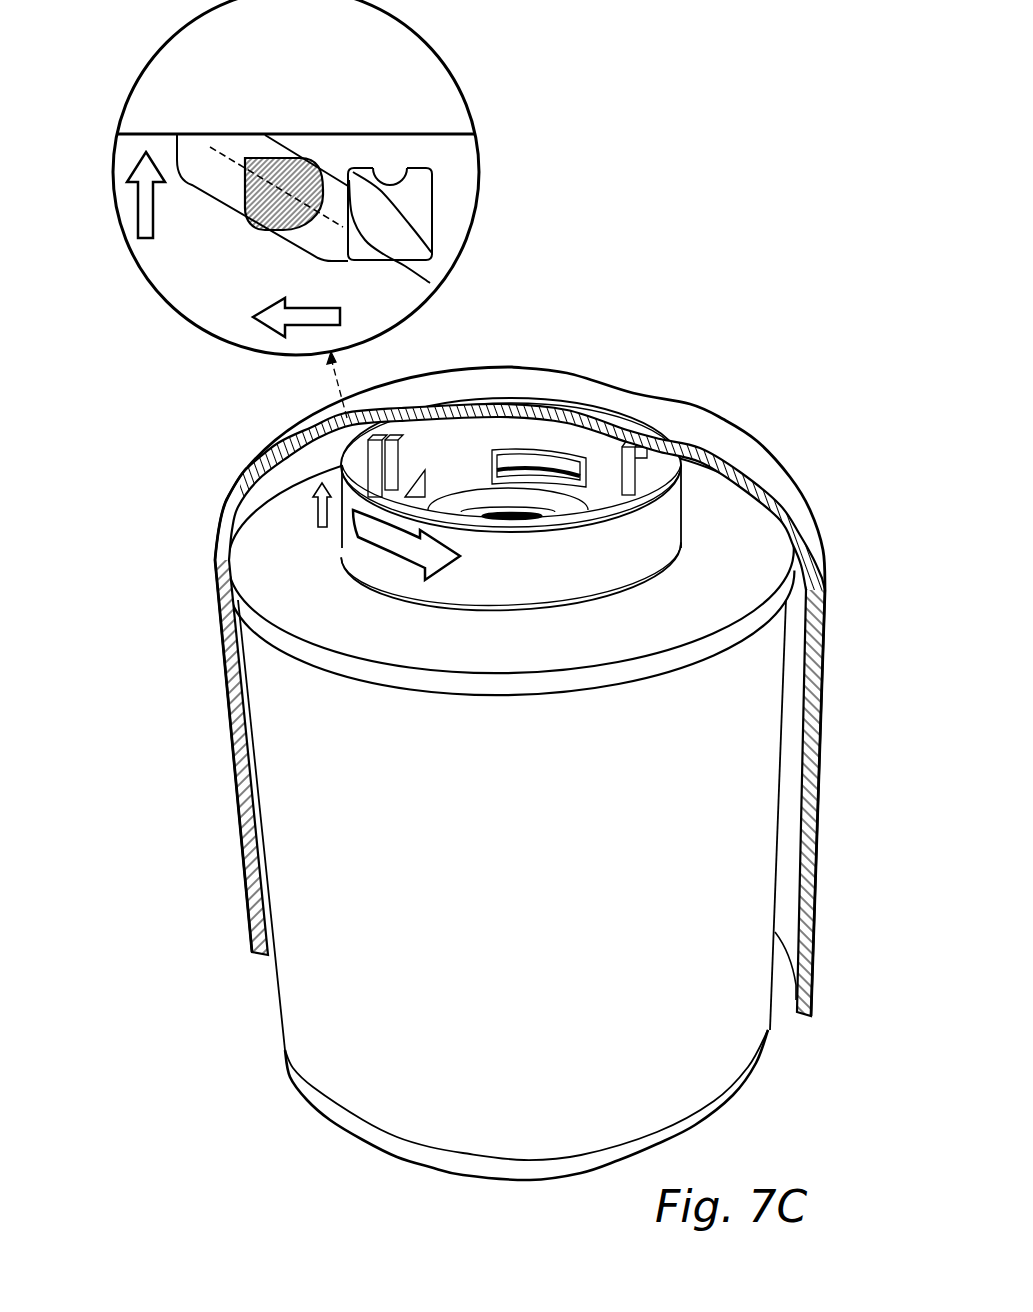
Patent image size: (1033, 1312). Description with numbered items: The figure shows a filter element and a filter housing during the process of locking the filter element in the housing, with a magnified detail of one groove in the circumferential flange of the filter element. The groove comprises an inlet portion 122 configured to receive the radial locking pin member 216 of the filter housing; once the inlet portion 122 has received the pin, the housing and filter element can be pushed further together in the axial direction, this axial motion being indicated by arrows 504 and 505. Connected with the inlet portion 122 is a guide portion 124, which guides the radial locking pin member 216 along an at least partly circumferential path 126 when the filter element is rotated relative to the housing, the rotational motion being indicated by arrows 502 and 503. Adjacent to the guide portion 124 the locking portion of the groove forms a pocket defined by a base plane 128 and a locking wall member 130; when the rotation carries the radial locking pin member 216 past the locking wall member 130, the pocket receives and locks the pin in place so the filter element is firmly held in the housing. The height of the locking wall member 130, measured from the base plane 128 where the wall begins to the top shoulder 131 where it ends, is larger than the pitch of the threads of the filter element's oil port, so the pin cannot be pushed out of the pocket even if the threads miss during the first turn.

The inlet portion 122 is at (217, 134).
The radial locking pin member 216 is at (293, 175).
The base plane 128 is at (405, 172).
The at least partly circumferential path 126 is at (320, 259).
The locking wall member 130 is at (430, 253).
The top shoulder 131 is at (417, 273).
The guide portion 124 is at (245, 194).
The arrow 505 is at (137, 208).
The arrow 503 is at (303, 323).
The arrow 504 is at (313, 509).
The arrow 502 is at (388, 549).